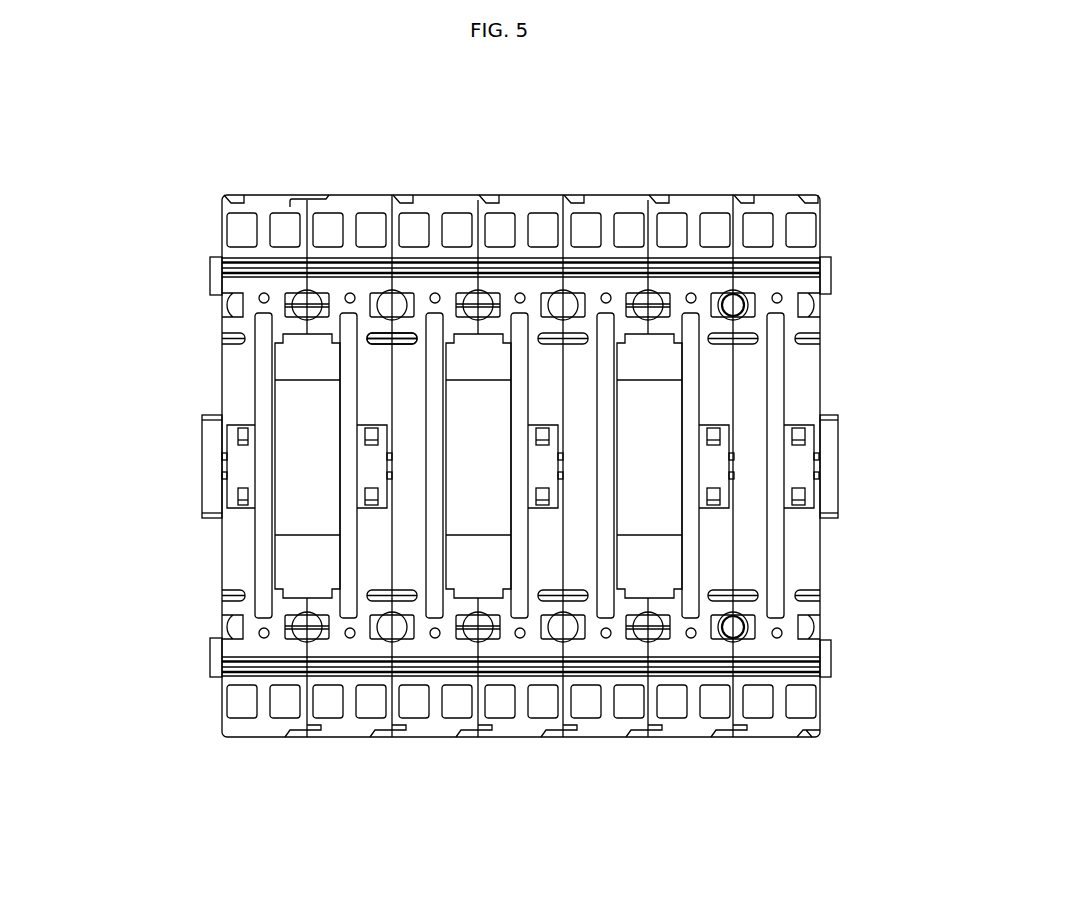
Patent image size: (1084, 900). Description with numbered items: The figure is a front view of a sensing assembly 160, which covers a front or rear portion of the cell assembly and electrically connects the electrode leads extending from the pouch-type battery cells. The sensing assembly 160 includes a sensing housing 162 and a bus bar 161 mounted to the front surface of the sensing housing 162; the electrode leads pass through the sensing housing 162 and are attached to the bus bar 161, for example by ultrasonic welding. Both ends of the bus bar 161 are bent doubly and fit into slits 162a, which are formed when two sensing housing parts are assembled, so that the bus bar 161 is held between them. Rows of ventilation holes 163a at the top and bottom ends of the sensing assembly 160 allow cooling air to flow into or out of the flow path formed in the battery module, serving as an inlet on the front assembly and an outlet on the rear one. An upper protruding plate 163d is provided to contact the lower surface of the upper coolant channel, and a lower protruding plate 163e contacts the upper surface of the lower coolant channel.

The sensing assembly 160 is at (328, 104).
The bus bar 161 is at (298, 400).
The sensing housing 162 is at (825, 358).
The slit 162a is at (380, 340).
The ventilation hole 163a is at (628, 230).
The upper protruding plate 163d is at (235, 265).
The lower protruding plate 163e is at (235, 663).